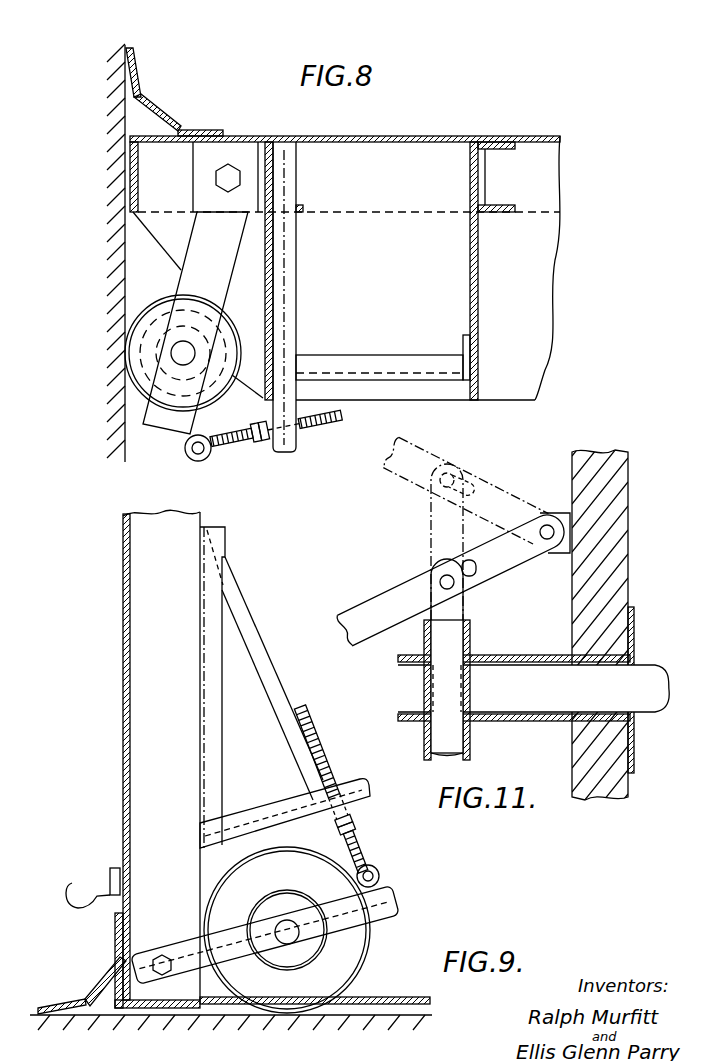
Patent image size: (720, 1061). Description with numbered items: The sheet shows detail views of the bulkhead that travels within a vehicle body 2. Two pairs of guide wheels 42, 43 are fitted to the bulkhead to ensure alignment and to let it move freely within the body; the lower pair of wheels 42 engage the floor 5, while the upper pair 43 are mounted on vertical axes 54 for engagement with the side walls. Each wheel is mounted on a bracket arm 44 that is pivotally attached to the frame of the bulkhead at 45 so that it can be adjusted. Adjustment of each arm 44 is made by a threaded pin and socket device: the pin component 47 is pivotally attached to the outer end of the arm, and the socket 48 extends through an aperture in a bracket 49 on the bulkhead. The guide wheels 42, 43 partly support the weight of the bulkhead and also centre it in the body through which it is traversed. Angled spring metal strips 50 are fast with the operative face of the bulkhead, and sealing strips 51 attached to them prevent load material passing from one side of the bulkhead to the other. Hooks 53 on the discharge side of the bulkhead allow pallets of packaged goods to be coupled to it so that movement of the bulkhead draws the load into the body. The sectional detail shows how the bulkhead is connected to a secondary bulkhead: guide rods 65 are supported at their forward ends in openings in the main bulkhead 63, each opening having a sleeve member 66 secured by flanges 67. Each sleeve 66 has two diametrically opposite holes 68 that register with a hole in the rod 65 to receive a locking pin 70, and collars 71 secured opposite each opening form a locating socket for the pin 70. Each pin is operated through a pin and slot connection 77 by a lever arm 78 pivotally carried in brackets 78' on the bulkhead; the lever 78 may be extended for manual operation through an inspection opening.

In FIG. 8, the frame member 2 is at (392, 136).
In FIG. 9, the frame member 2 is at (123, 552).
In FIG. 9, the floor 5 is at (413, 1010).
In FIG. 9, the guide wheels 42 is at (358, 966).
In FIG. 8, the guide wheels 43 is at (134, 400).
In FIG. 8, the bracket arms 44 is at (212, 285).
In FIG. 9, the bracket arms 44 is at (385, 910).
In FIG. 8, the pivotal attachment 45 is at (232, 163).
In FIG. 9, the pivotal attachment 45 is at (163, 954).
In FIG. 8, the pin component 47 is at (252, 441).
In FIG. 9, the pin component 47 is at (326, 754).
In FIG. 8, the socket 48 is at (297, 431).
In FIG. 8, the bracket 49 is at (288, 287).
In FIG. 9, the bracket 49 is at (213, 747).
In FIG. 8, the angled spring metal strips 50 is at (144, 98).
In FIG. 9, the angled spring metal strips 50 is at (88, 995).
In FIG. 8, the sealing strips 51 is at (134, 54).
In FIG. 9, the sealing strips 51 is at (52, 1013).
In FIG. 9, the hooks 53 is at (97, 886).
In FIG. 8, the vertical axes 54 is at (194, 360).
In FIG. 11, the main bulkhead 63 is at (622, 568).
In FIG. 11, the guide rods 65 is at (590, 702).
In FIG. 11, the sleeve member 66 is at (528, 655).
In FIG. 11, the flanges 67 is at (648, 632).
In FIG. 11, the holes 68 is at (475, 722).
In FIG. 11, the locking pin 70 is at (440, 740).
In FIG. 11, the collars 71 is at (472, 632).
In FIG. 11, the pin and slot connection 77 is at (472, 582).
In FIG. 11, the lever arm 78 is at (453, 577).
In FIG. 11, the brackets 78' is at (467, 490).